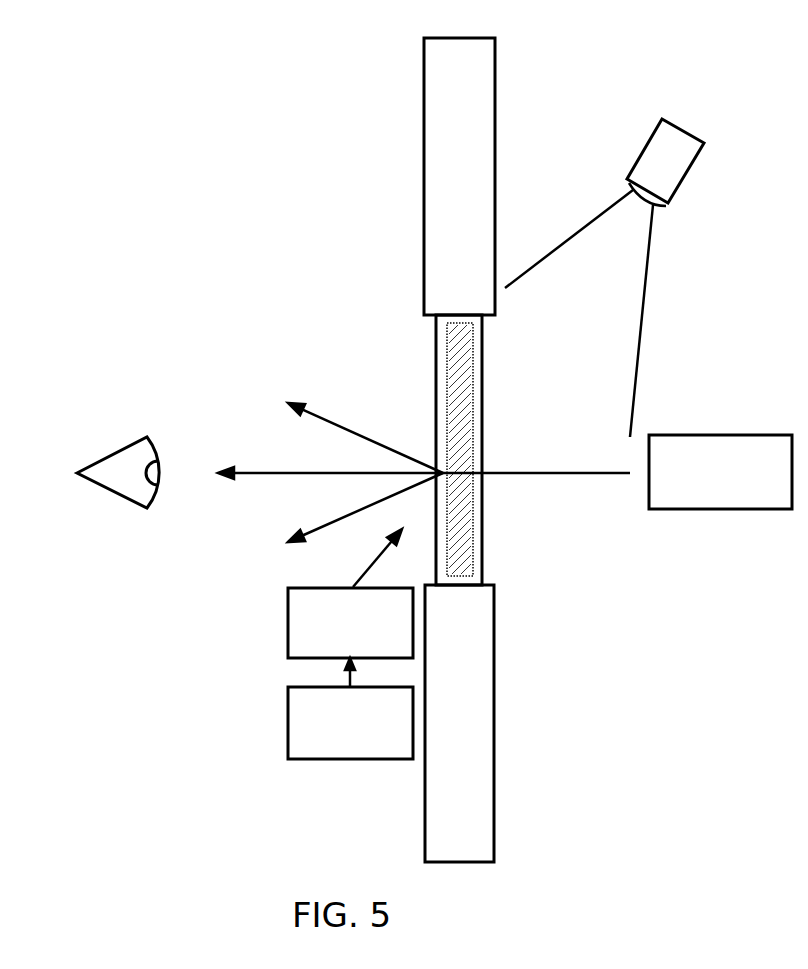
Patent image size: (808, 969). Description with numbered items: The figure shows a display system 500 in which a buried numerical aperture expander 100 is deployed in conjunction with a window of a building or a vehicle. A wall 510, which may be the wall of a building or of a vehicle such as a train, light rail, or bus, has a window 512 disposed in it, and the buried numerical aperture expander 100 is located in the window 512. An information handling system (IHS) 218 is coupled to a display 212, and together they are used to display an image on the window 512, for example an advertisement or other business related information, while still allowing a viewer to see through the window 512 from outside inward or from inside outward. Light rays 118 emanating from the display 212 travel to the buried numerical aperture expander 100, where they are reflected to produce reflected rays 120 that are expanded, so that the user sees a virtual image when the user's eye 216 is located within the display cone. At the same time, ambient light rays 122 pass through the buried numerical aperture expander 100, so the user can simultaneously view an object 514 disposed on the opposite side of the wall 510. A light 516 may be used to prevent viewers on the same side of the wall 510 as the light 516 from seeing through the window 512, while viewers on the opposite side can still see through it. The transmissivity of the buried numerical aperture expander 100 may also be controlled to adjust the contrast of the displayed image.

The display system 500 is at (255, 92).
The wall 510 is at (495, 83).
The window 512 is at (436, 348).
The buried numerical aperture expander 100 is at (473, 368).
The light 516 is at (685, 130).
The object 514 is at (765, 435).
The ambient light rays 122 is at (274, 451).
The reflected rays 120 is at (355, 430).
The light rays 118 is at (362, 575).
The user's eye 216 is at (140, 435).
The display 212 is at (288, 622).
The information handling system (IHS) 218 is at (288, 723).